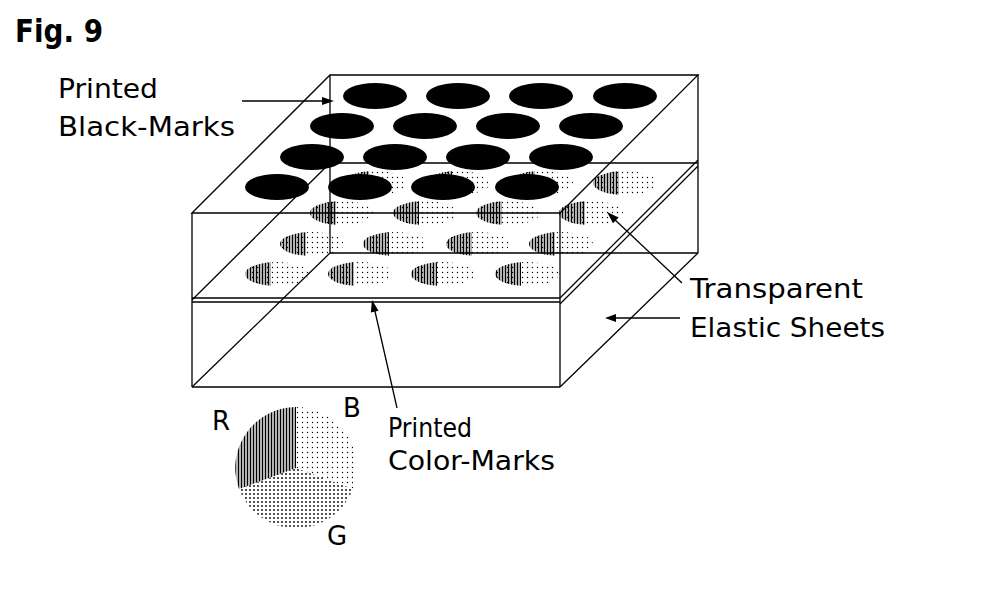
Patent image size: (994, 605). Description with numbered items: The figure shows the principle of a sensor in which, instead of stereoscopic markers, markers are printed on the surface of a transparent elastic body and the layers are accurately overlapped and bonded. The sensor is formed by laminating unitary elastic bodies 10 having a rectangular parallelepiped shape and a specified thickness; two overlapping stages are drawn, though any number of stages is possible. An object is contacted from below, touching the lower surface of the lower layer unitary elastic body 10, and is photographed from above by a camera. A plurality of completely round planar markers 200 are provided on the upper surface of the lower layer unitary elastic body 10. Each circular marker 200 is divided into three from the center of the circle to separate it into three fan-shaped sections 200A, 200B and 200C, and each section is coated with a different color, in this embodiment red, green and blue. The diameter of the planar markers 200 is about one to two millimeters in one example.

The unitary elastic body 10 is at (687, 130).
The planar marker 200 is at (528, 283).
The fan-shaped section 200A is at (256, 457).
The fan-shaped section 200B is at (268, 497).
The fan-shaped section 200C is at (343, 472).